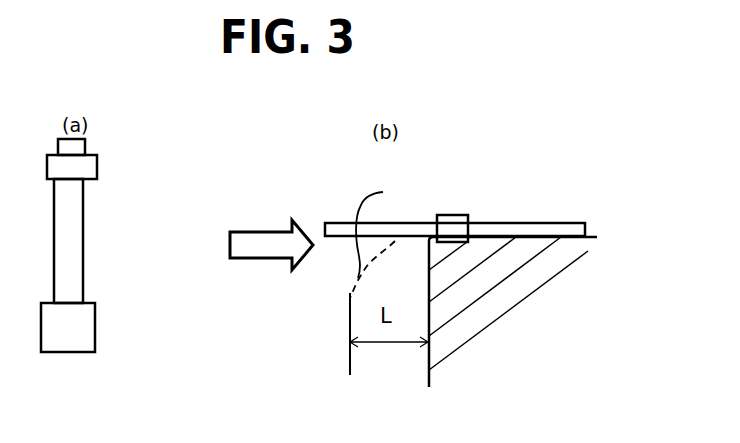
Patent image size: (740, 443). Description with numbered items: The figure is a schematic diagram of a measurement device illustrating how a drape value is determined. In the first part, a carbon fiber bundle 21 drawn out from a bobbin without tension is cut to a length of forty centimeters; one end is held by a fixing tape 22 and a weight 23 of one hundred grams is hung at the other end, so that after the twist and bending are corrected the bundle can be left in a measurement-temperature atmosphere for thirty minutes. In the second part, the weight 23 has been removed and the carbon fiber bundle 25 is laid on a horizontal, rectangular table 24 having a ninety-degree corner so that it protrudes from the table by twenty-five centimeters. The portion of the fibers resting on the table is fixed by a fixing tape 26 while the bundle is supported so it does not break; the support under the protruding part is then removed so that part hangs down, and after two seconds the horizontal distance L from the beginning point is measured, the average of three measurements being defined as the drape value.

The carbon fiber bundle 21 is at (68, 217).
The fixing tape 22 is at (83, 165).
The weight 23 is at (67, 320).
The table 24 is at (513, 263).
The carbon fiber bundle 25 is at (363, 223).
The fixing tape 26 is at (451, 228).